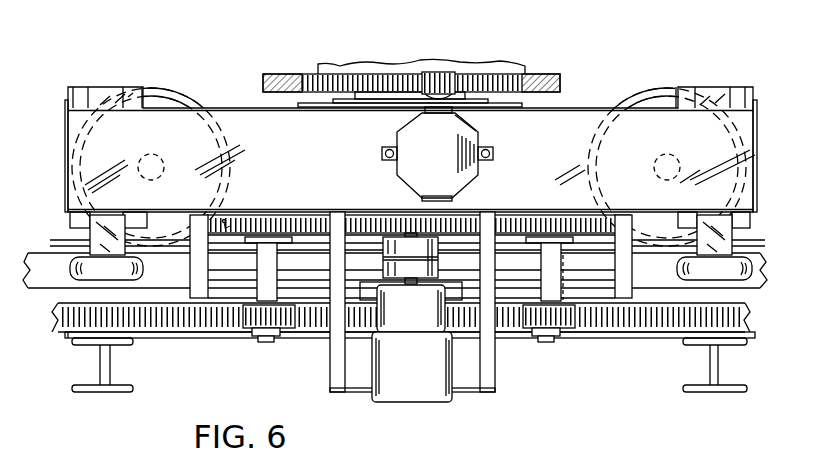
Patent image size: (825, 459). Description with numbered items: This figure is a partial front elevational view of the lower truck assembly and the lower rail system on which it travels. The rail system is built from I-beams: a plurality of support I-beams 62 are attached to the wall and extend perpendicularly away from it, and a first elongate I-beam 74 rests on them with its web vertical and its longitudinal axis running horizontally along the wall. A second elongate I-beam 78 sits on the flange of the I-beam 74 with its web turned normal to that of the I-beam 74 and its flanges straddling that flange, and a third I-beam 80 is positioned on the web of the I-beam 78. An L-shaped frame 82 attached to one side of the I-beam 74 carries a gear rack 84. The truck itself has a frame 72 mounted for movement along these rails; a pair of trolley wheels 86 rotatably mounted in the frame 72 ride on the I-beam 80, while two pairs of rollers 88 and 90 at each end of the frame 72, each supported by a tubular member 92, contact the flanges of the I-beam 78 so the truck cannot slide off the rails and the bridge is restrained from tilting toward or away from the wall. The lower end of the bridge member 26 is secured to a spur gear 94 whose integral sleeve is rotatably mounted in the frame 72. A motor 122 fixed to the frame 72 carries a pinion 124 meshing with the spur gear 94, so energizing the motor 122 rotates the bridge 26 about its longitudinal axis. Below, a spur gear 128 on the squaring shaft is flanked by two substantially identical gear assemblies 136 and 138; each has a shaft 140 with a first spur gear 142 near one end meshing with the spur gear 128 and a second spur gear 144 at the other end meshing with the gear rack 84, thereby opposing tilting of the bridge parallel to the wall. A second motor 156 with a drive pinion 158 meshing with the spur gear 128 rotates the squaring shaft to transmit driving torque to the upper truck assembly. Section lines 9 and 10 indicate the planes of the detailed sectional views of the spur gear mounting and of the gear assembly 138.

The section line 9- 9 is at (409, 10).
The section line 10- 10 is at (555, 180).
The bridge member 26 is at (370, 72).
The support I-beam 62 is at (107, 372).
The frame 72 is at (82, 127).
The first elongate I-beam 74 is at (58, 316).
The second elongate I-beam 78 is at (44, 278).
The third I-beam 80 is at (52, 240).
The L-shaped frame 82 is at (62, 336).
The gear rack 84 is at (70, 338).
The trolley wheels 86 is at (165, 104).
The rollers 88 is at (70, 268).
The rollers 90 is at (732, 268).
The tubular member 92 is at (62, 230).
The spur gear 94 is at (512, 75).
The motor 122 is at (462, 148).
The pinion 124 is at (440, 73).
The spur gear 128 is at (360, 226).
The gear assembly 136 is at (240, 340).
The gear assembly 138 is at (546, 352).
The shaft 140 is at (290, 226).
The first spur gear 142 is at (224, 228).
The second spur gear 144 is at (296, 344).
The motor 156 is at (400, 388).
The drive pinion 158 is at (412, 226).